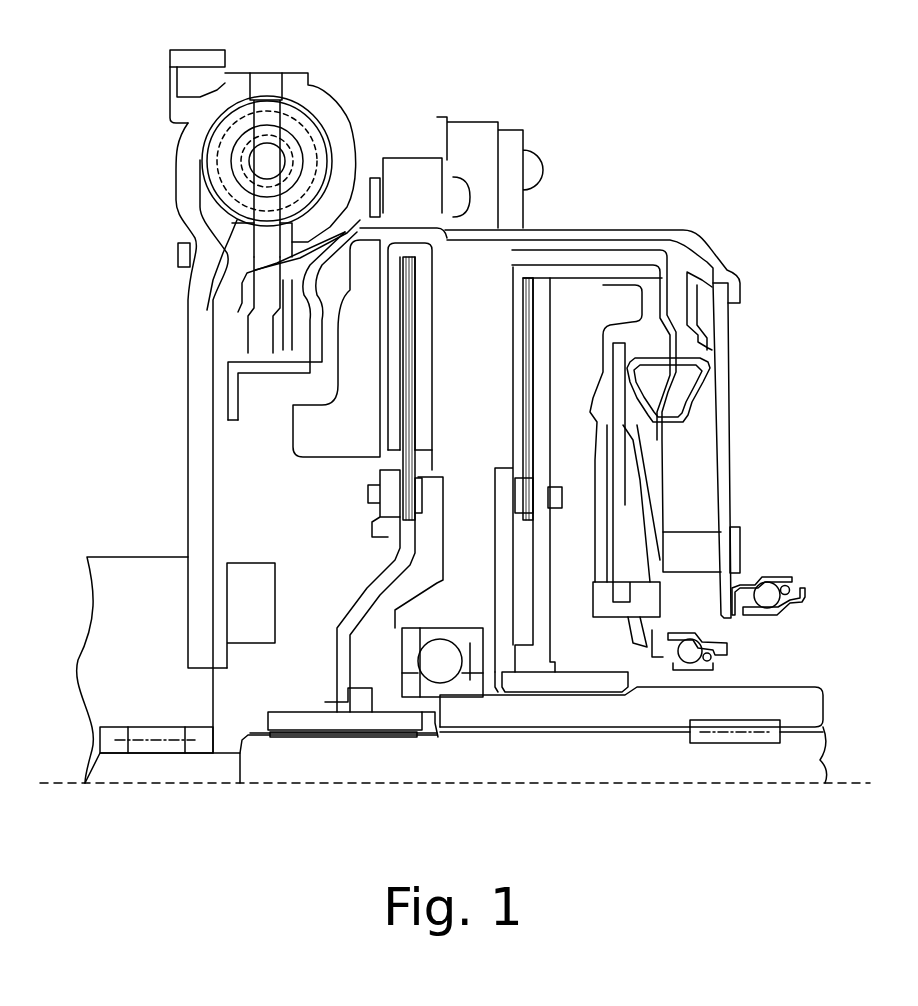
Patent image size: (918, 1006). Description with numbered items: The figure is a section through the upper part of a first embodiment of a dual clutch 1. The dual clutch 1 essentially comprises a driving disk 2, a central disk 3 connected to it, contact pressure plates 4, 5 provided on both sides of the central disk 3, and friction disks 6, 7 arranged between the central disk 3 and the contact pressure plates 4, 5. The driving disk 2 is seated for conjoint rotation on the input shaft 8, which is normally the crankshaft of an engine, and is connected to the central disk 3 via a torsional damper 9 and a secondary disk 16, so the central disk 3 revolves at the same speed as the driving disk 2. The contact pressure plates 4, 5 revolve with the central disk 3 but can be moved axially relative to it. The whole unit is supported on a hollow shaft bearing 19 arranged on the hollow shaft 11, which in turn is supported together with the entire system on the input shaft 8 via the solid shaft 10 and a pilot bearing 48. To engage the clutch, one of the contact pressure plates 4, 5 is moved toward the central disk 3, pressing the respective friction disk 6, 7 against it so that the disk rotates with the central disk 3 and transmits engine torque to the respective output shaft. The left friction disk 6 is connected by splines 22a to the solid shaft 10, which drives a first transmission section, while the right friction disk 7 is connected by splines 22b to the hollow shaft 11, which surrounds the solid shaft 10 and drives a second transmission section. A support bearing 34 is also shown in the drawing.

The dual clutch 1 is at (627, 228).
The driving disk 2 is at (190, 173).
The central disk 3 is at (432, 420).
The contact pressure plate 4 is at (380, 397).
The contact pressure plate 5 is at (613, 283).
The friction disk 6 is at (397, 337).
The friction disk 7 is at (523, 418).
The input shaft 8 is at (135, 687).
The torsional damper 9 is at (250, 115).
The solid shaft 10 is at (340, 757).
The hollow shaft 11 is at (580, 715).
The secondary disk 16 is at (258, 345).
The hollow shaft bearing 19 is at (475, 640).
The splines 22a is at (373, 747).
The splines 22b is at (605, 687).
The support bearing 34 is at (460, 633).
The pilot bearing 48 is at (147, 740).